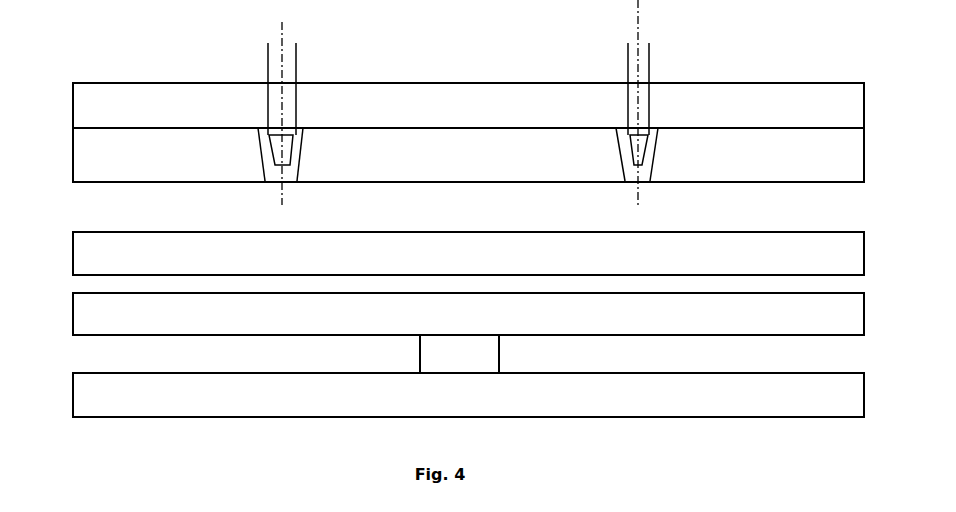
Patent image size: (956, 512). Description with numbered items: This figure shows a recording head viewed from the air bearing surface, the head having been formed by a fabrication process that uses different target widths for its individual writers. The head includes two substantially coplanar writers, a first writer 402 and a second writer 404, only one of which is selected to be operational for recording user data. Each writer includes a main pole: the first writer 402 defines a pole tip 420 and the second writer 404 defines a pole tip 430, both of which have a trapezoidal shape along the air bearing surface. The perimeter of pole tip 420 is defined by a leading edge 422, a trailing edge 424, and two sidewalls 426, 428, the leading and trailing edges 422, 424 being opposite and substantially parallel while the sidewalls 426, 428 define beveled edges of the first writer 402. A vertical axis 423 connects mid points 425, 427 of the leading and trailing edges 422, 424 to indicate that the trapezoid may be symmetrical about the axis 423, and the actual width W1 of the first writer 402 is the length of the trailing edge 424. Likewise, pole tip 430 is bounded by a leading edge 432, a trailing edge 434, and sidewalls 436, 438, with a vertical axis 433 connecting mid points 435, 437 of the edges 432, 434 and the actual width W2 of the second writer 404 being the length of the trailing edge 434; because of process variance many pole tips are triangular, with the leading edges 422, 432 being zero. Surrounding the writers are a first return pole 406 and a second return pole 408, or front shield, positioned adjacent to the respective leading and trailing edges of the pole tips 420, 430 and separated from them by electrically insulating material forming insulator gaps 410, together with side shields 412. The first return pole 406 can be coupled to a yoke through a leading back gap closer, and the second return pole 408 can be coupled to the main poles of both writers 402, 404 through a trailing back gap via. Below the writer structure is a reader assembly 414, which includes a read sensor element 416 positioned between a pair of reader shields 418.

The first writer 402 is at (262, 48).
The second writer 404 is at (622, 48).
The first return pole 406 is at (438, 262).
The second return pole 408 is at (438, 116).
The insulator gap 410 is at (272, 168).
The side shield 412 is at (130, 164).
The reader assembly 414 is at (70, 290).
The read sensor element 416 is at (443, 362).
The reader shields 418 is at (772, 312).
The pole tip 420 is at (378, 142).
The leading edge 422 is at (283, 167).
The vertical axis 423 is at (281, 27).
The trailing edge 424 is at (294, 132).
The mid point 425 is at (280, 167).
The sidewall 426 is at (262, 148).
The mid point 427 is at (281, 134).
The sidewall 428 is at (292, 152).
The pole tip 430 is at (736, 146).
The leading edge 432 is at (640, 168).
The vertical axis 433 is at (637, 27).
The trailing edge 434 is at (650, 131).
The mid point 435 is at (637, 167).
The sidewall 436 is at (622, 147).
The mid point 437 is at (637, 134).
The sidewall 438 is at (648, 147).
The actual width W1 is at (304, 50).
The actual width W2 is at (657, 50).